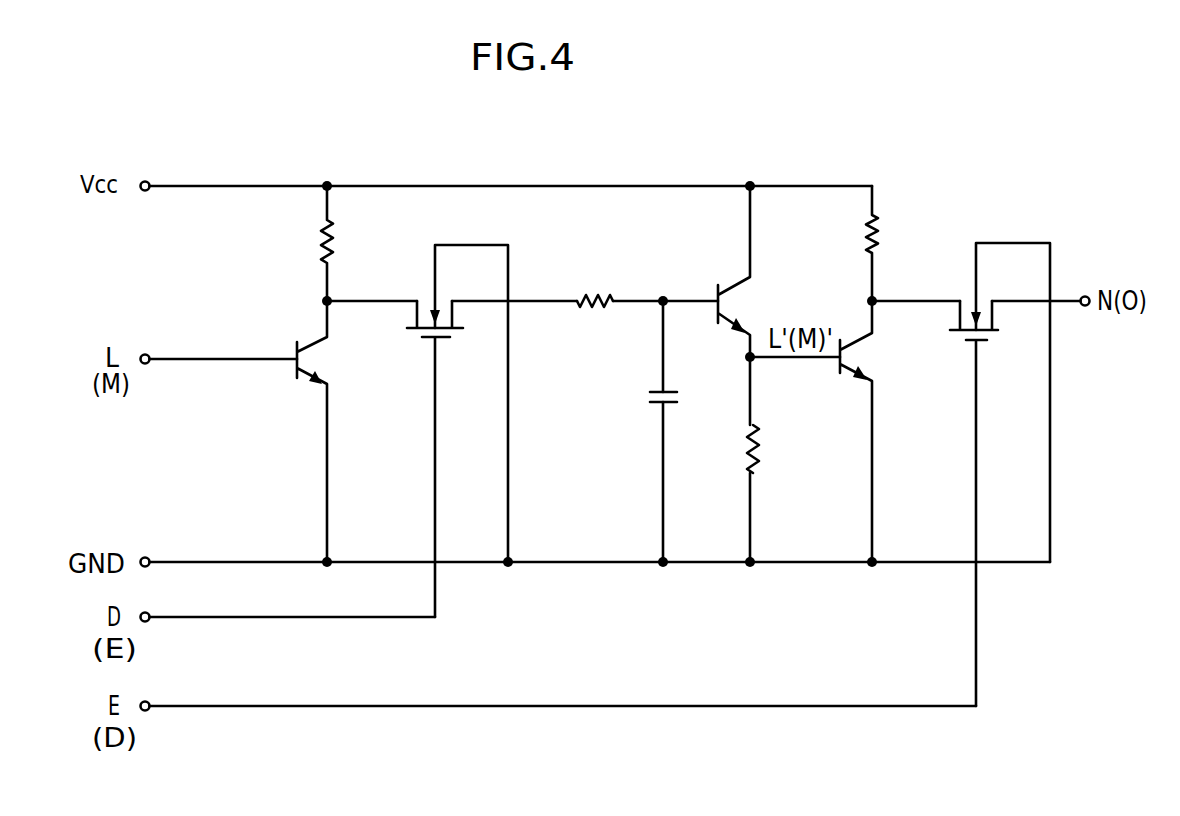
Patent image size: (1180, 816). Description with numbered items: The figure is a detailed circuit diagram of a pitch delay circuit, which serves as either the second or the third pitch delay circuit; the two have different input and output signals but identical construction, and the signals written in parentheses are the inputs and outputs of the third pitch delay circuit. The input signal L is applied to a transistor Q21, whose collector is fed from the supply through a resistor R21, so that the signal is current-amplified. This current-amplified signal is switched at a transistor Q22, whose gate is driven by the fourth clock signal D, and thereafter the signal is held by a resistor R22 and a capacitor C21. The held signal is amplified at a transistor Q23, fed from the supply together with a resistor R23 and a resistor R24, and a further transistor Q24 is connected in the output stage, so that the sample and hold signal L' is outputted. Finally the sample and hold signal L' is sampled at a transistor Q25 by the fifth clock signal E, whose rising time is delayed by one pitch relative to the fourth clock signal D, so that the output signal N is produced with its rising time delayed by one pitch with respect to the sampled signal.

The resistor R21 is at (351, 243).
The resistor R22 is at (597, 285).
The resistor R23 is at (779, 449).
The resistor R24 is at (897, 243).
The capacitor C21 is at (639, 412).
The transistor Q21 is at (331, 431).
The transistor Q22 is at (457, 431).
The transistor Q23 is at (749, 271).
The transistor Q24 is at (873, 431).
The transistor Q25 is at (1000, 474).